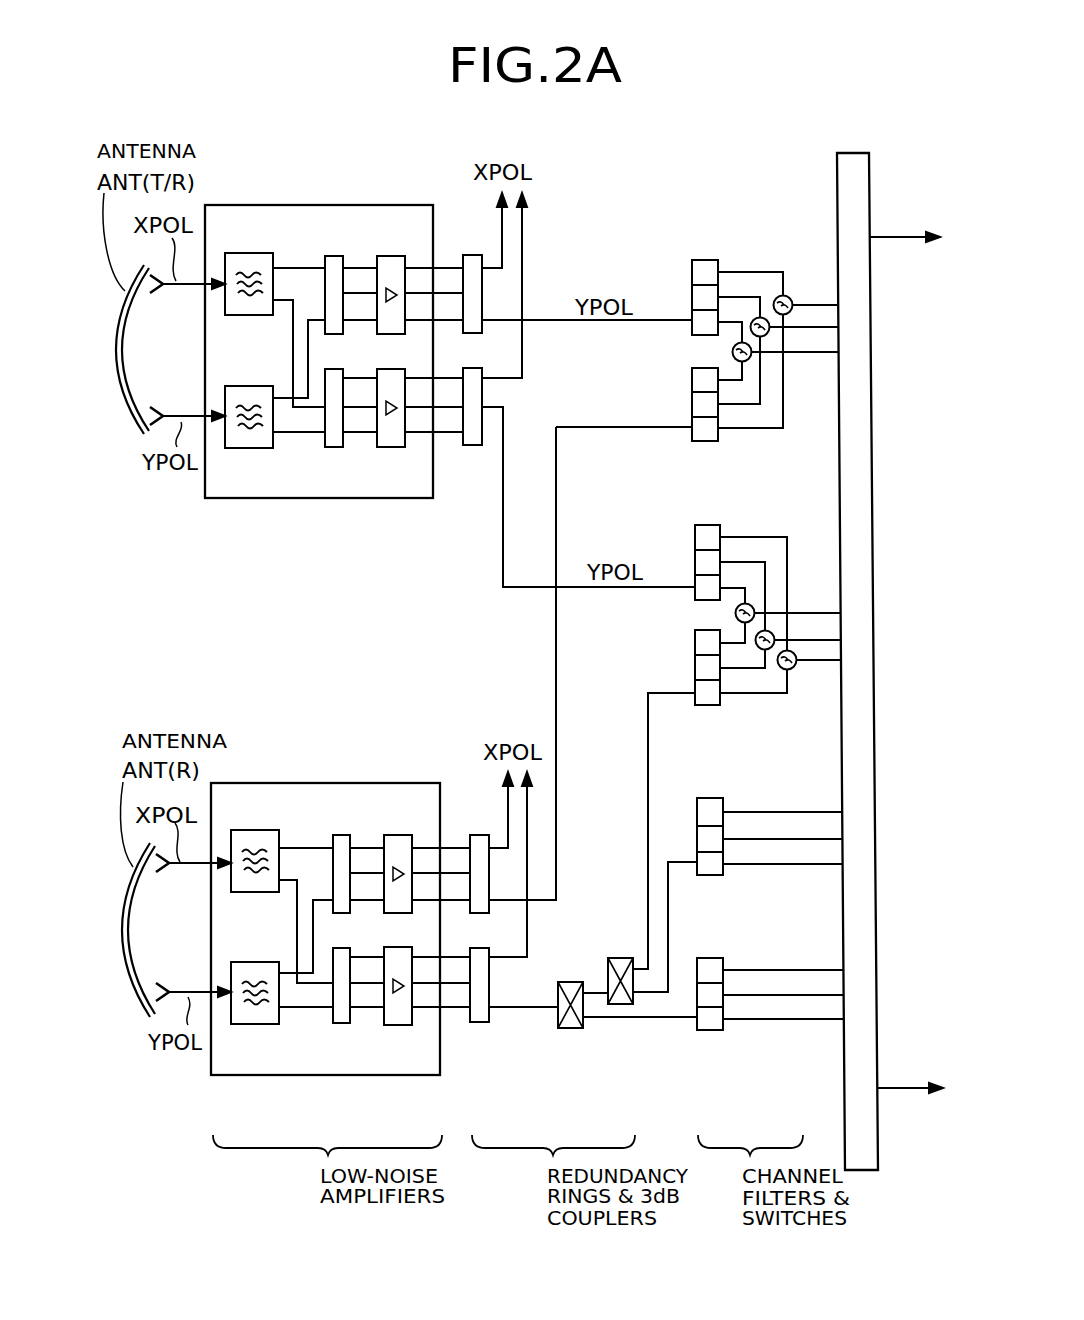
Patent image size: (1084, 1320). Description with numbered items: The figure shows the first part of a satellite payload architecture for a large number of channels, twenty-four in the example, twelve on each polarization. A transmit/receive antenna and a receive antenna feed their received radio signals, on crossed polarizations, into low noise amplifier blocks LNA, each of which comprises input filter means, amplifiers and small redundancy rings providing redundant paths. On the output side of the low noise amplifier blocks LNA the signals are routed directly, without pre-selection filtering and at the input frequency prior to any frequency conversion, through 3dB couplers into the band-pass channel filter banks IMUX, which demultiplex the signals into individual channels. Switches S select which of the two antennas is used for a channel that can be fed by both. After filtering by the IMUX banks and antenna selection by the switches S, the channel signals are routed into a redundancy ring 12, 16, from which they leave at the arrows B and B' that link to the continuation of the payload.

The redundancy ring 12 is at (884, 612).
The redundancy ring 16 is at (857, 167).
The low noise amplifier block LNA is at (310, 205).
The band-pass channel filter bank IMUX is at (708, 261).
The switch S is at (791, 297).
The 3dB coupler 3dB is at (620, 958).
The connection arrow B is at (905, 255).
The connection arrow B' is at (915, 1106).